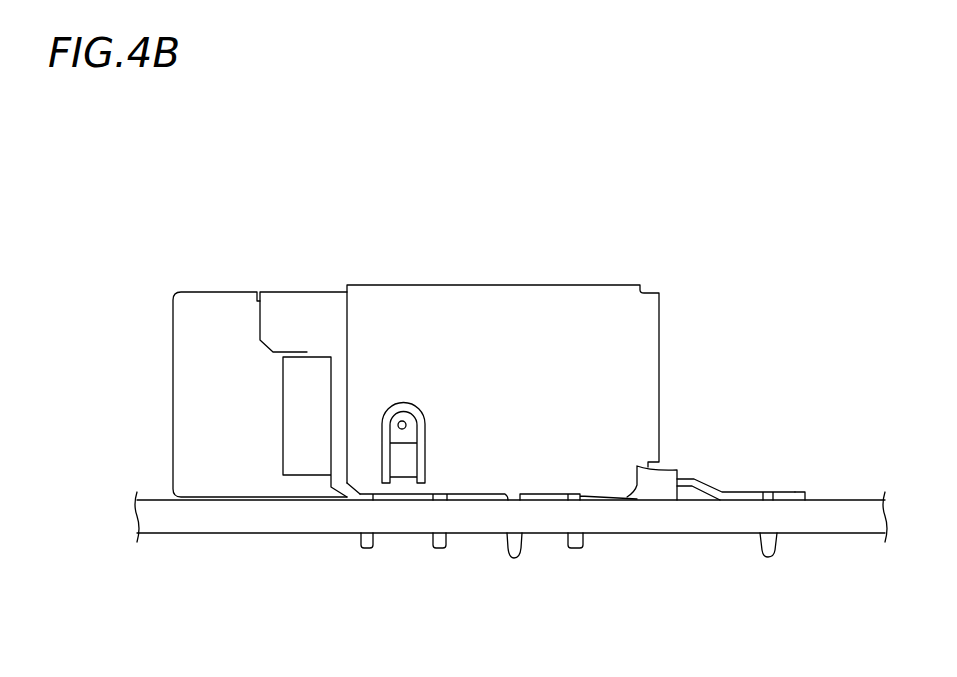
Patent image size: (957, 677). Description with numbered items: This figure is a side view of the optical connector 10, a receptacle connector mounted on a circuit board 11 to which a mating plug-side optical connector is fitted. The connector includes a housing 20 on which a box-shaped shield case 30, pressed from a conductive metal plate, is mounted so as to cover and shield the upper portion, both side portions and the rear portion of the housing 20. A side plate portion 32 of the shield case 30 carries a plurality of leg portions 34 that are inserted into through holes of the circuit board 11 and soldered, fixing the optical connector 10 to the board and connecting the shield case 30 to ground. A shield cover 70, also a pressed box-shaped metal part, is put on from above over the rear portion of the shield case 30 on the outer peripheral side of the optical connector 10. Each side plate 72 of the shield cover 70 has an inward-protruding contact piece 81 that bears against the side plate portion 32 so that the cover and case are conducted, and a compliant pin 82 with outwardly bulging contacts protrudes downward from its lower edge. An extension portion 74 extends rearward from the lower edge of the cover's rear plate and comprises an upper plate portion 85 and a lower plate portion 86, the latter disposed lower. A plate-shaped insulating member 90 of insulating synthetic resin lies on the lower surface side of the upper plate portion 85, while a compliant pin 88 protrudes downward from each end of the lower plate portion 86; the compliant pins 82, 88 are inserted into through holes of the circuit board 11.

The optical connector 10 is at (270, 196).
The circuit board 11 is at (212, 537).
The housing 20 is at (198, 284).
The shield case 30 is at (292, 331).
The side plate portion 32 is at (298, 308).
The leg portions 34 is at (436, 549).
The shield cover 70 is at (503, 335).
The side plate 72 is at (498, 308).
The extension portion 74 is at (712, 488).
The contact piece 81 is at (412, 407).
The compliant pin 82 is at (507, 549).
The upper plate portion 85 is at (690, 476).
The lower plate portion 86 is at (797, 491).
The compliant pin 88 is at (767, 556).
The insulating member 90 is at (690, 503).